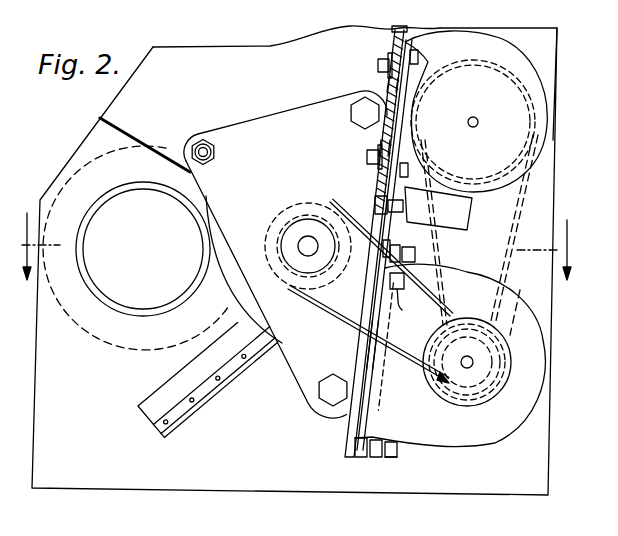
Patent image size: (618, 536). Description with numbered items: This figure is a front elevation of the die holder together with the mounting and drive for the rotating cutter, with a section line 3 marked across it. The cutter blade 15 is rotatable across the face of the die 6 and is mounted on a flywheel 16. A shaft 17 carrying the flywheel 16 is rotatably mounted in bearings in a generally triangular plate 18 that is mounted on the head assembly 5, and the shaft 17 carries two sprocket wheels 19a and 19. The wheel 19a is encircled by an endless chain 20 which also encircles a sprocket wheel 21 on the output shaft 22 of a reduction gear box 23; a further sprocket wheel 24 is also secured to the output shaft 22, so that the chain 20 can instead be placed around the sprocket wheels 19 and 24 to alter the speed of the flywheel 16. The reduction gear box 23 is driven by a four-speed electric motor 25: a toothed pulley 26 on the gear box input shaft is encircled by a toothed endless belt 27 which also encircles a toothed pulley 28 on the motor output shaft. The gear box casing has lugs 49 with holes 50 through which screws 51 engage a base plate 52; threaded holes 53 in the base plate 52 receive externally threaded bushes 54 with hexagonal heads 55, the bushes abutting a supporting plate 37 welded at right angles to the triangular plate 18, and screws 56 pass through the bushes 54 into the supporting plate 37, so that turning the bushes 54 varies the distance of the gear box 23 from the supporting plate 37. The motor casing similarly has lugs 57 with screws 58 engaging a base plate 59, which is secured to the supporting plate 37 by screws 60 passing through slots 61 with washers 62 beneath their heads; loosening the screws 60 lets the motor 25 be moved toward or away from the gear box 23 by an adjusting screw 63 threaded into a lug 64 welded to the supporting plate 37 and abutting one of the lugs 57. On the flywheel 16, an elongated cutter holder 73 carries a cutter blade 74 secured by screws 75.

The section line 3- 3 is at (297, 235).
The head assembly 5 is at (53, 173).
The die 6 is at (117, 275).
The cutter blade 15 is at (163, 440).
The flywheel 16 is at (212, 266).
The shaft 17 is at (308, 246).
The triangular plate 18 is at (266, 132).
The sprocket wheel 19 is at (287, 232).
The sprocket wheel 19a is at (310, 205).
The endless chain 20 is at (323, 311).
The sprocket wheel 21 is at (510, 300).
The output shaft 22 is at (473, 363).
The reduction gear box 23 is at (492, 432).
The sprocket wheel 24 is at (495, 386).
The electric motor 25 is at (540, 150).
The toothed pulley 26 is at (448, 268).
The toothed endless belt 27 is at (513, 200).
The toothed pulley 28 is at (533, 76).
The supporting plate 37 is at (394, 36).
The lugs 49 is at (392, 378).
The holes 50 is at (392, 358).
The screws 51 is at (394, 414).
The base plate 52 is at (373, 345).
The threaded holes 53 is at (360, 457).
The externally threaded bushes 54 is at (374, 457).
The hexagonal heads 55 is at (390, 457).
The screws 56 is at (420, 258).
The lugs 57 is at (482, 37).
The screws 58 is at (418, 56).
The base plate 59 is at (404, 108).
The screws 60 is at (380, 65).
The slots 61 is at (392, 82).
The washers 62 is at (386, 56).
The adjusting screw 63 is at (382, 208).
The lug 64 is at (403, 207).
The cutter holder 73 is at (182, 372).
The cutter blade 74 is at (248, 365).
The screws 75 is at (222, 379).